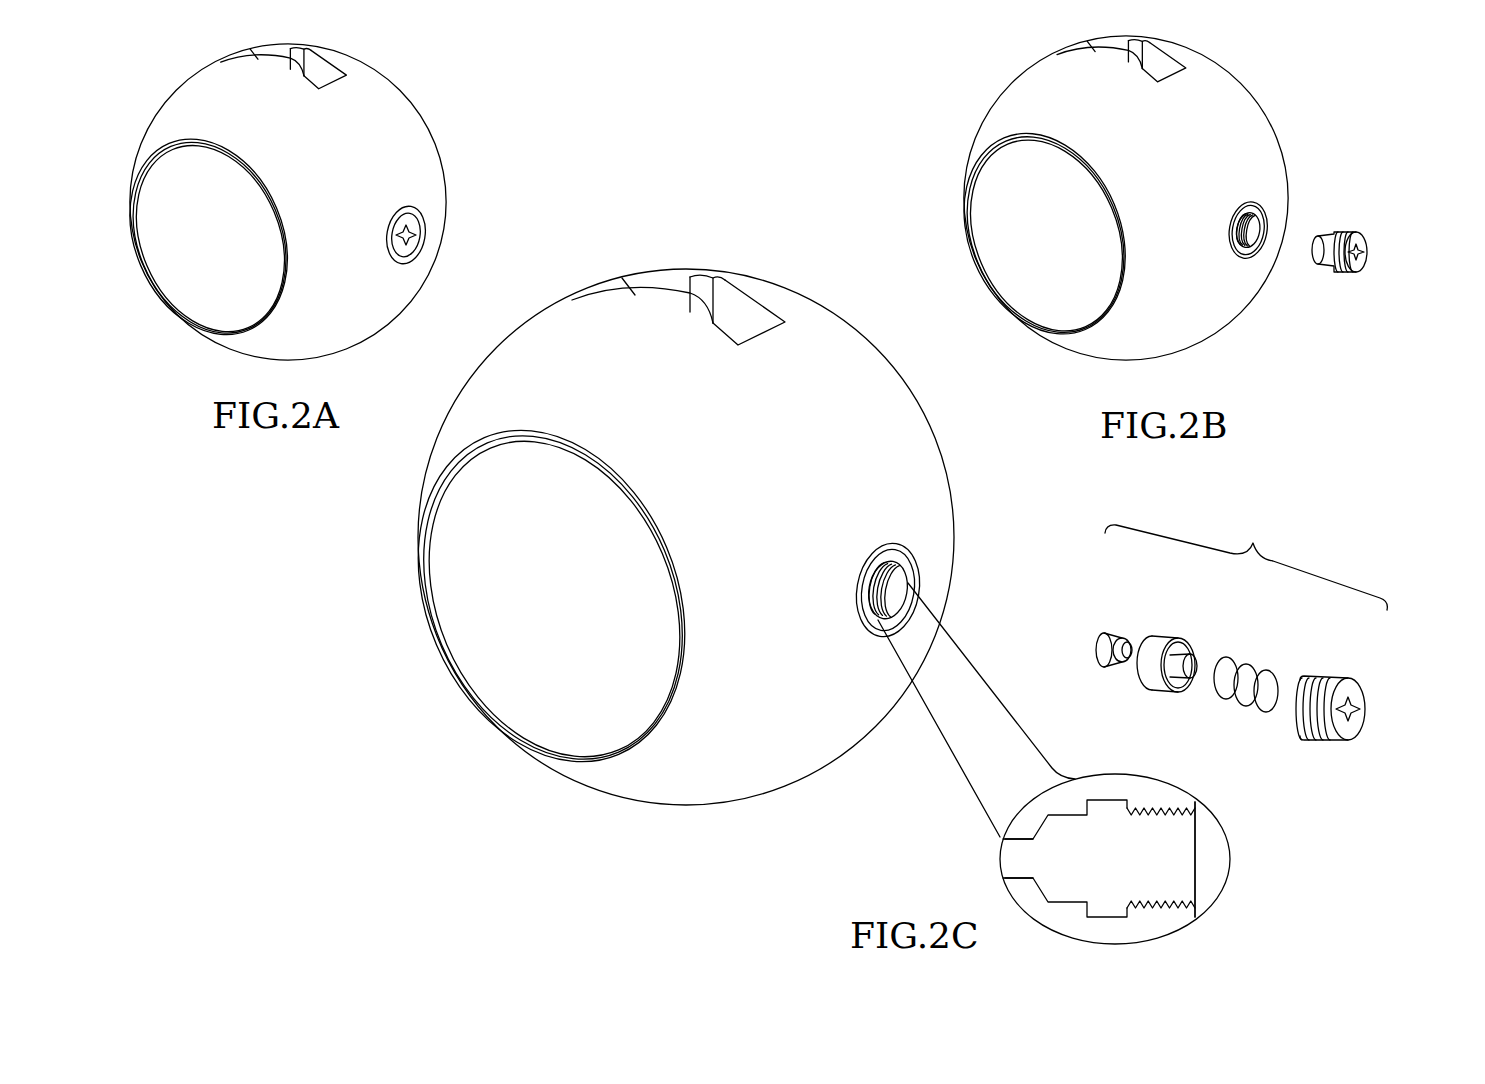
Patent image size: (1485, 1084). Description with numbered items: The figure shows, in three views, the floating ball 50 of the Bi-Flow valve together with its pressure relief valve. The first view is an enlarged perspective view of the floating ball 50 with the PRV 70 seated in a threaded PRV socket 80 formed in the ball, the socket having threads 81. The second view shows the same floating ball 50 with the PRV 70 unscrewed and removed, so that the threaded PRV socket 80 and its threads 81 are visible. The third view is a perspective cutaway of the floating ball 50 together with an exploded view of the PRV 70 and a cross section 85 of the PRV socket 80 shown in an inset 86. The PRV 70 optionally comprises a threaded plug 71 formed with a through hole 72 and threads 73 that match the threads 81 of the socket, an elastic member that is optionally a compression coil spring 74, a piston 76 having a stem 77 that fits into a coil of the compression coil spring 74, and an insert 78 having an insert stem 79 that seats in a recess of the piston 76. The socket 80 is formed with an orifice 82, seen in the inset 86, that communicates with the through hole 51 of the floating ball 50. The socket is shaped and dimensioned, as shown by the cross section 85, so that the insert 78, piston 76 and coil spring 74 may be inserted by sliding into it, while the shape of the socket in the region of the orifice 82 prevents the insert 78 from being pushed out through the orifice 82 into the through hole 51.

In FIG. 2A, the floating ball 50 is at (300, 176).
In FIG. 2B, the floating ball 50 is at (1161, 172).
In FIG. 2C, the floating ball 50 is at (728, 496).
In FIG. 2A, the through hole 51 is at (182, 233).
In FIG. 2B, the through hole 51 is at (1007, 242).
In FIG. 2C, the through hole 51 is at (502, 647).
In FIG. 2A, the pressure relief valve (PRV) 70 is at (412, 233).
In FIG. 2B, the pressure relief valve (PRV) 70 is at (1357, 223).
In FIG. 2C, the pressure relief valve (PRV) 70 is at (1246, 561).
In FIG. 2C, the threaded plug 71 is at (1347, 673).
In FIG. 2C, the through hole 72 is at (1358, 727).
In FIG. 2C, the threads 73 is at (1300, 727).
In FIG. 2C, the compression coil spring 74 is at (1227, 657).
In FIG. 2C, the piston 76 is at (1158, 645).
In FIG. 2C, the stem 77 is at (1173, 692).
In FIG. 2C, the insert 78 is at (1105, 630).
In FIG. 2C, the insert stem 79 is at (1128, 665).
In FIG. 2A, the threaded PRV socket 80 is at (428, 213).
In FIG. 2B, the threaded PRV socket 80 is at (1242, 230).
In FIG. 2C, the threaded PRV socket 80 is at (873, 585).
In FIG. 2B, the threads 81 is at (1262, 227).
In FIG. 2C, the threads 81 is at (916, 592).
In FIG. 2C, the orifice 82 is at (1012, 860).
In FIG. 2C, the cross section 85 is at (1112, 790).
In FIG. 2C, the inset 86 is at (1223, 888).